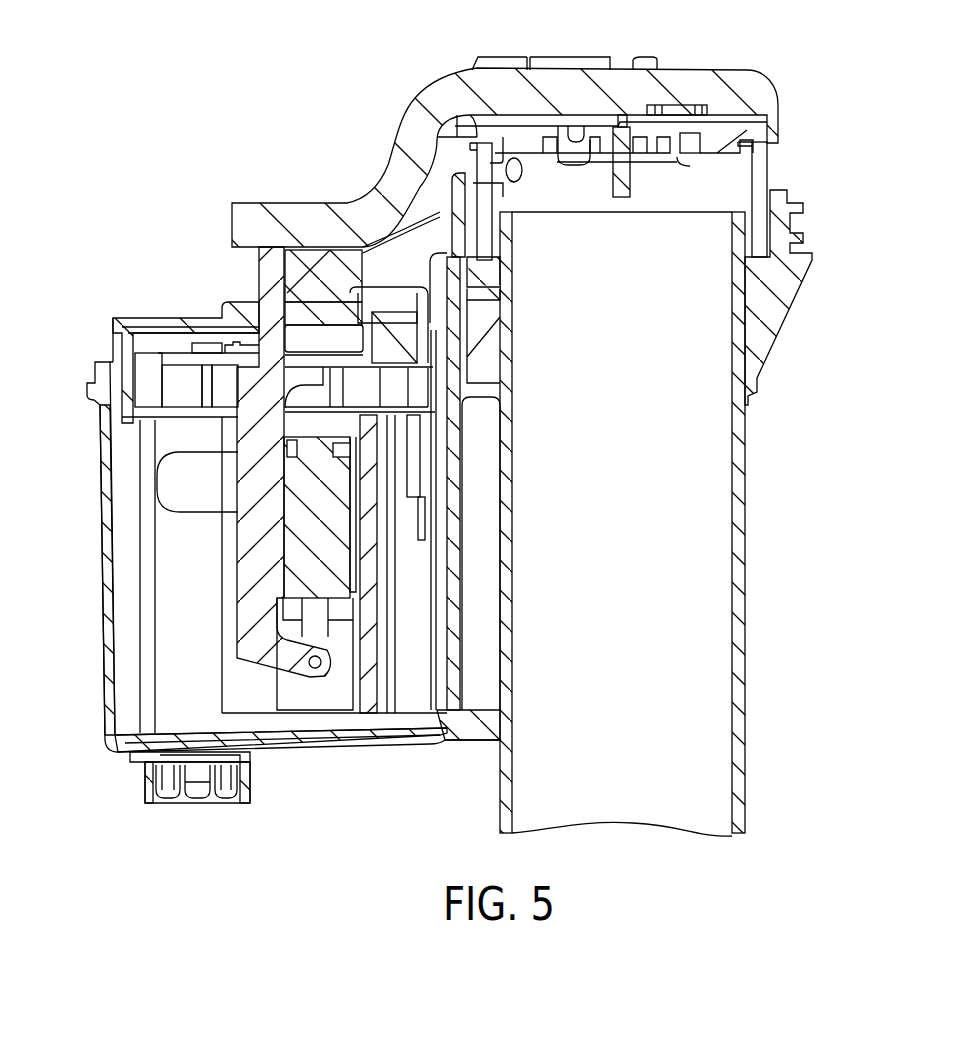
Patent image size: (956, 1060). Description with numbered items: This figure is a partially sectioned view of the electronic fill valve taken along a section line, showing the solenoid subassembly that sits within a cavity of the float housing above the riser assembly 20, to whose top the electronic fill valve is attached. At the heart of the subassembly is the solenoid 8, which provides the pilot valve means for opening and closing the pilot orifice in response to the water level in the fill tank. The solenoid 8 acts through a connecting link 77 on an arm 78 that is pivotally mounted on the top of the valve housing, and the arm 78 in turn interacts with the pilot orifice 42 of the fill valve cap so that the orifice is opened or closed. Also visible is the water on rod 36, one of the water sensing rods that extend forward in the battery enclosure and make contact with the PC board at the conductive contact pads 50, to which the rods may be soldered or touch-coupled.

The arm 78 is at (421, 100).
The pilot orifice 42 is at (676, 160).
The contact pads 50 is at (385, 368).
The water on rod 36 is at (427, 530).
The riser assembly 20 is at (745, 667).
The connecting link 77 is at (245, 528).
The solenoid 8 is at (295, 572).